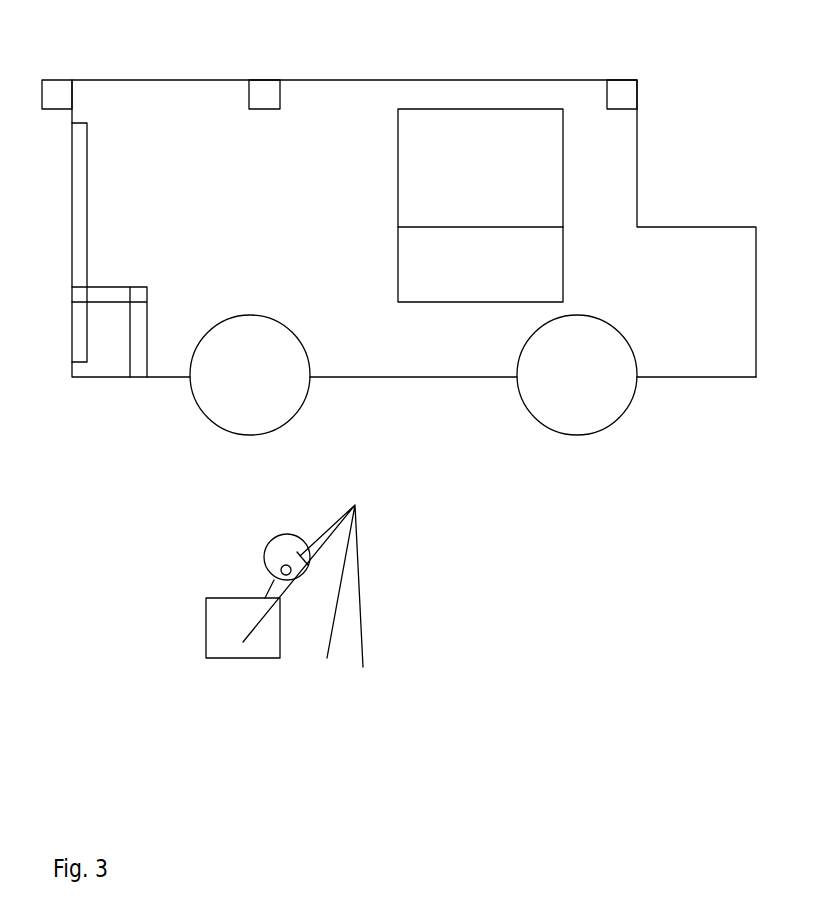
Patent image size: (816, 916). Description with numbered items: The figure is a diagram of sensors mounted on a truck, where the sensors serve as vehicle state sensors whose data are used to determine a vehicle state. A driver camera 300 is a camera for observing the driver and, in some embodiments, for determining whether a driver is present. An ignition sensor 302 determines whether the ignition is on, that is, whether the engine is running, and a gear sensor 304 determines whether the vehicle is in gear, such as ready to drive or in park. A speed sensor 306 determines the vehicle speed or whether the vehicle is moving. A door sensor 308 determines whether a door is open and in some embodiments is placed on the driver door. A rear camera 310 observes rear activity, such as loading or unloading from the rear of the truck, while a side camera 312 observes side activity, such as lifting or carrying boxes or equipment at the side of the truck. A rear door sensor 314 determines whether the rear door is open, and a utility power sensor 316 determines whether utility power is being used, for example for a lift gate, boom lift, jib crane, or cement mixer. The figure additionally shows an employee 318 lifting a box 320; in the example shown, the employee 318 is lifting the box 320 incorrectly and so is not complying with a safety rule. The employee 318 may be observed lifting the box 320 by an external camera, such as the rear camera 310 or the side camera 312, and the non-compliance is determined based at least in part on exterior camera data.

The driver camera 300 is at (620, 87).
The ignition sensor 302 is at (705, 283).
The gear sensor 304 is at (670, 315).
The speed sensor 306 is at (523, 358).
The door sensor 308 is at (403, 252).
The rear camera 310 is at (53, 87).
The side camera 312 is at (260, 87).
The rear door sensor 314 is at (87, 192).
The utility power sensor 316 is at (147, 290).
The employee 318 is at (332, 510).
The box 320 is at (205, 620).